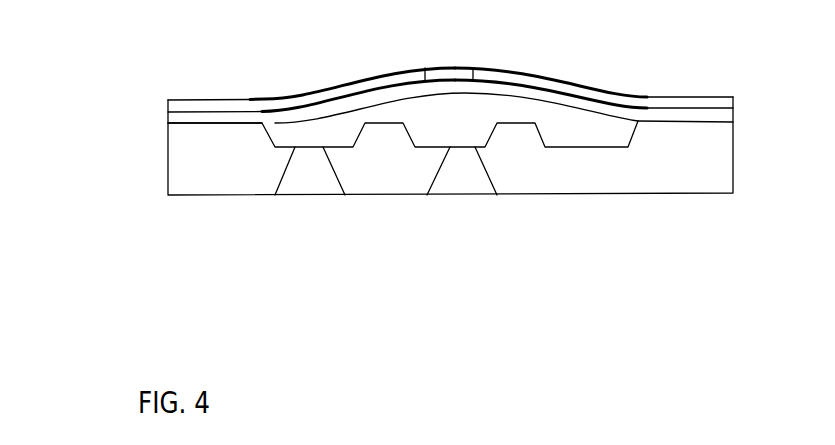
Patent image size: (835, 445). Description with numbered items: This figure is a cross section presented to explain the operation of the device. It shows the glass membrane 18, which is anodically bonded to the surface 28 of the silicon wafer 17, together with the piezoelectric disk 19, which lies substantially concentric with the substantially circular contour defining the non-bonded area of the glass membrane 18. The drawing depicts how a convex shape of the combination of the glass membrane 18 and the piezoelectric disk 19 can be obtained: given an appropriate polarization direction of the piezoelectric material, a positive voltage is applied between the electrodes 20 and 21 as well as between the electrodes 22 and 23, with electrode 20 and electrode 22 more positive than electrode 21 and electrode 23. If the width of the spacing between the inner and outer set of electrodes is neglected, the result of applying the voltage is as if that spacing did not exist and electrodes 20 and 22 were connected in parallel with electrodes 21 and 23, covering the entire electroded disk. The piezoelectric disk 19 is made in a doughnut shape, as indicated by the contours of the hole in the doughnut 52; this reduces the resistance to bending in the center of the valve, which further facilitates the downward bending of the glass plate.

The silicon wafer 17 is at (215, 170).
The glass membrane 18 is at (192, 122).
The piezoelectric disk 19 is at (192, 99).
The electrode 20 is at (615, 25).
The electrode 21 is at (557, 86).
The electrode 22 is at (265, 97).
The electrode 23 is at (302, 107).
The surface 28 is at (677, 123).
The hole in the doughnut 52 is at (490, 25).